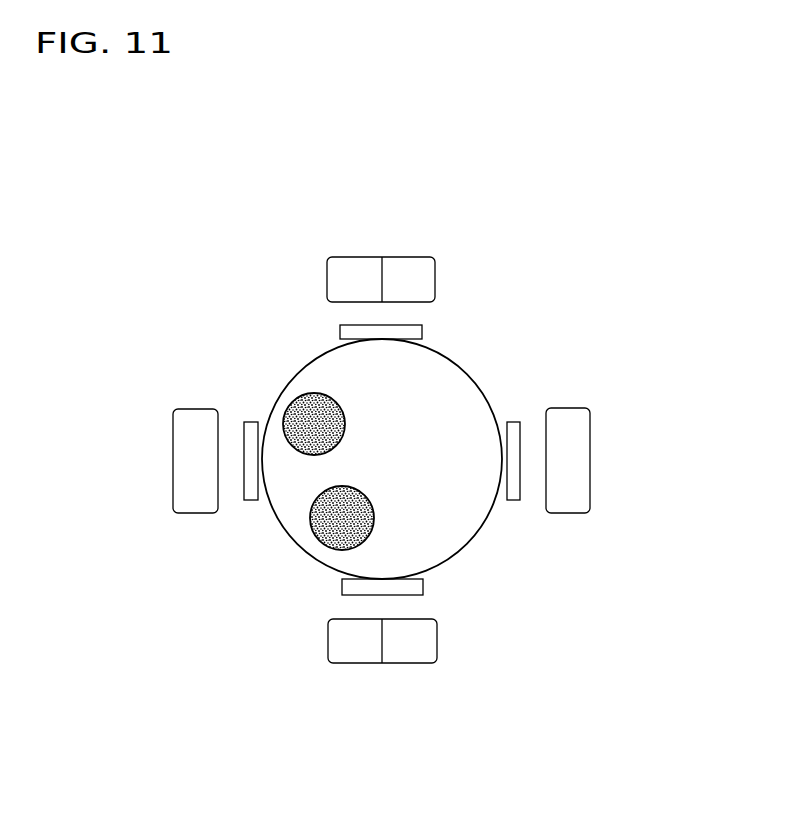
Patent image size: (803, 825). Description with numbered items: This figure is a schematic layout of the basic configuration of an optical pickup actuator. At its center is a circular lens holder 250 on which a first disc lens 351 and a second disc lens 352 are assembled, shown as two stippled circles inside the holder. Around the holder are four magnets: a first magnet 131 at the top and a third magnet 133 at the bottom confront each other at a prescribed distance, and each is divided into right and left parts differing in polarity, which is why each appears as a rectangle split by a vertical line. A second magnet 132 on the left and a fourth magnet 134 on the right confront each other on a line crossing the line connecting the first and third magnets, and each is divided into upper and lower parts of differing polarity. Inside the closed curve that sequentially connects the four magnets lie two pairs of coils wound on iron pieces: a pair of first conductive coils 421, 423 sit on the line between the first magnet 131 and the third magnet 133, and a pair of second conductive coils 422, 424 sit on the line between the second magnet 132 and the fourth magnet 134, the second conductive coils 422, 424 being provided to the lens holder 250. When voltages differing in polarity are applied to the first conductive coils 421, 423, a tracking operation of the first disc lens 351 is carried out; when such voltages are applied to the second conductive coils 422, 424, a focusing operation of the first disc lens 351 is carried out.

The lens holder 250 is at (566, 342).
The first magnet 131 is at (425, 249).
The second magnet 132 is at (187, 460).
The third magnet 133 is at (415, 670).
The fourth magnet 134 is at (578, 457).
The first conductive coil 421 is at (413, 323).
The second conductive coil 422 is at (248, 483).
The first conductive coil 423 is at (417, 585).
The second conductive coil 424 is at (520, 487).
The first disc lens 351 is at (323, 540).
The second disc lens 352 is at (303, 397).